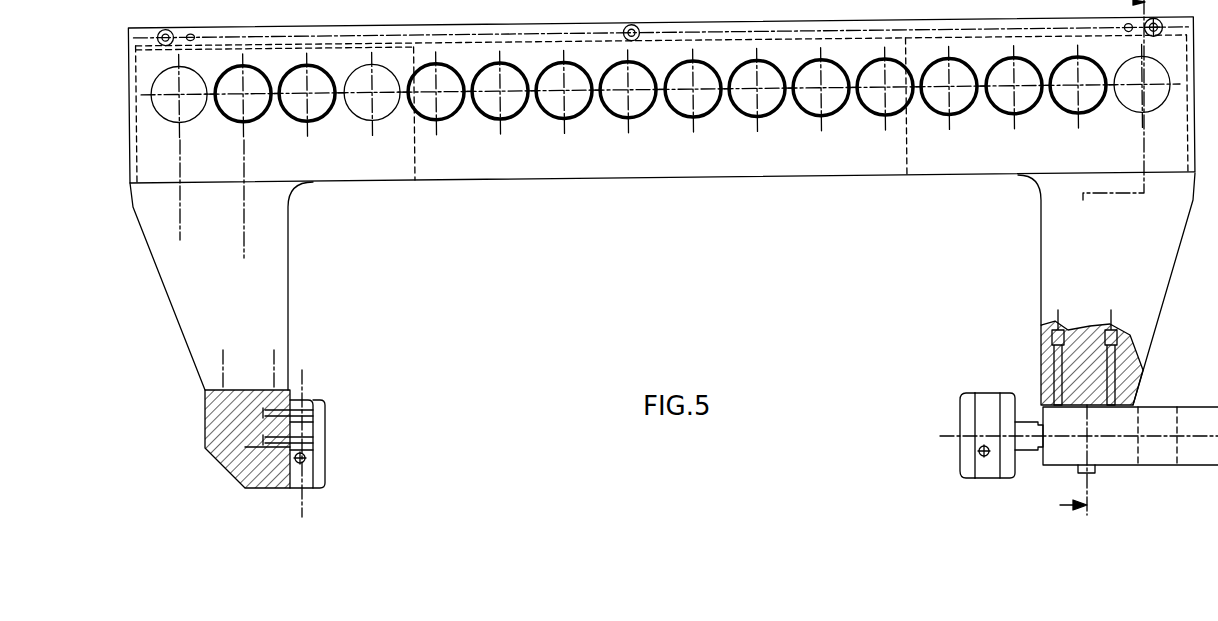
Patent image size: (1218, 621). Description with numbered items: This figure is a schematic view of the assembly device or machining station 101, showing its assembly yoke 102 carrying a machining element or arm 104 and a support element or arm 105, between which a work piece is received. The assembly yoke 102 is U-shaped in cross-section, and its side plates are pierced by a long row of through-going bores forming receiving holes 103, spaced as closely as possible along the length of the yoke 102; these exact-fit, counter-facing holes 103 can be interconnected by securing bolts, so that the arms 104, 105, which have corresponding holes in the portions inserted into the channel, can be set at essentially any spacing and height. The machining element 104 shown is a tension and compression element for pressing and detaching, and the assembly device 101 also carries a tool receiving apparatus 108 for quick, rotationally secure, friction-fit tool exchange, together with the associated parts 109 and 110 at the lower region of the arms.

The assembly device 101 is at (777, 218).
The assembly yoke 102 is at (531, 165).
The receiving holes 103 is at (702, 104).
The machining element 104 is at (1057, 267).
The support element 105 is at (278, 303).
The tool receiving apparatus 108 is at (1152, 450).
The drive motor 109 is at (985, 470).
The bearing block 110 is at (327, 474).